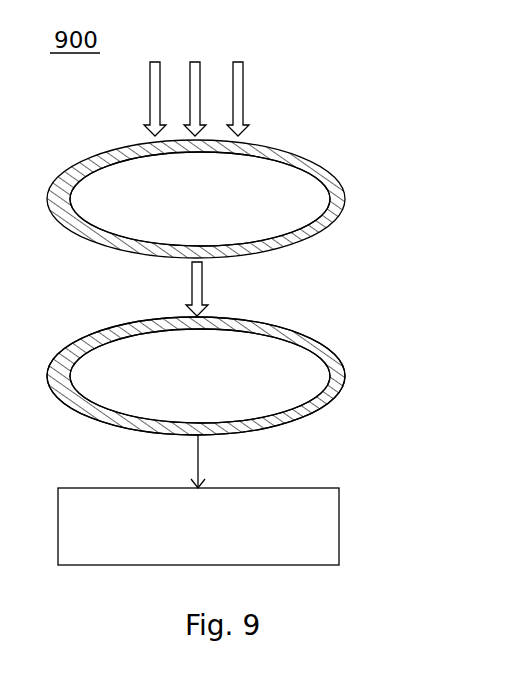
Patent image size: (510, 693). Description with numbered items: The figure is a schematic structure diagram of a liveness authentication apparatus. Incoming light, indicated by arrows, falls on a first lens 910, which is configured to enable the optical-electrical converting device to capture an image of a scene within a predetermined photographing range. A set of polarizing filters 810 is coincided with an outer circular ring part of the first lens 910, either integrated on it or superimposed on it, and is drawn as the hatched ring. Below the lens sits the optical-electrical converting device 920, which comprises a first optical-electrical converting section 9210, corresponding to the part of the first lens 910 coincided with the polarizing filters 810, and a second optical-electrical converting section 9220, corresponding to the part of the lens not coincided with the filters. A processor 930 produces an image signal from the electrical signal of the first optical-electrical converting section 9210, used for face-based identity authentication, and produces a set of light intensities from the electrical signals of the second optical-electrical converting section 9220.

The set of polarizing filters 810 is at (332, 176).
The first lens 910 is at (303, 207).
The optical-electrical converting device 920 is at (230, 376).
The first optical-electrical converting section 9210 is at (330, 352).
The second optical-electrical converting section 9220 is at (283, 396).
The processor 930 is at (235, 526).